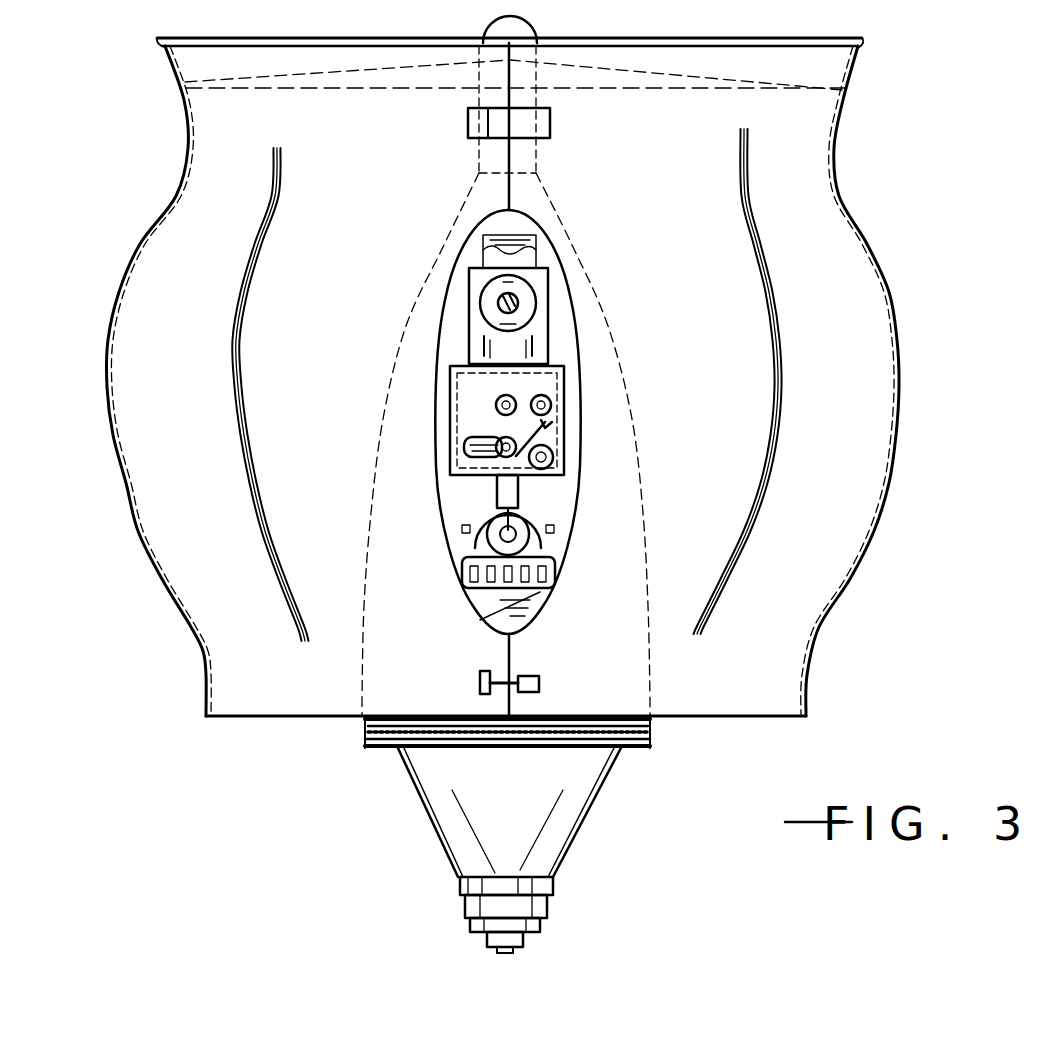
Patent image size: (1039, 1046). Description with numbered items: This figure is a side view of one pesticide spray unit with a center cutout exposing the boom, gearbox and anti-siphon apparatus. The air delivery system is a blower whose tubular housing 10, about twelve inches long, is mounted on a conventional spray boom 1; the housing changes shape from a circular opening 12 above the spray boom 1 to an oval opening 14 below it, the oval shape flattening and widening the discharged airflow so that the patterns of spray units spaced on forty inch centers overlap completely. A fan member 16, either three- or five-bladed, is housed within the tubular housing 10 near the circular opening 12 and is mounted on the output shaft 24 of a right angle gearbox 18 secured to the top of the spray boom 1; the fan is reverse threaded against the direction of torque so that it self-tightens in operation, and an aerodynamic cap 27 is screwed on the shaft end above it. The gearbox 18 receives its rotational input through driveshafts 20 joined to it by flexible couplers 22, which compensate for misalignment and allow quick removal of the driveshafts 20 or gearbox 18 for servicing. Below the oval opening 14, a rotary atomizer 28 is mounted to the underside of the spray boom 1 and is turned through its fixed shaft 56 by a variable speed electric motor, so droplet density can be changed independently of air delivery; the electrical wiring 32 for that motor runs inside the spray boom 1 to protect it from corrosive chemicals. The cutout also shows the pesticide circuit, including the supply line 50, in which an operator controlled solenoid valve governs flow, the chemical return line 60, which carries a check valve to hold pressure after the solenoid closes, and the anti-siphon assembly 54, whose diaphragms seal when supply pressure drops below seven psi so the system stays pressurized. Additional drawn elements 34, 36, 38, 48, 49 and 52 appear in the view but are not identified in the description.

The spray boom 1 is at (452, 374).
The tubular housing 10 is at (835, 162).
The circular opening 12 is at (863, 45).
The oval opening 14 is at (784, 717).
The fan member 16 is at (237, 80).
The right angle gearbox 18 is at (478, 328).
The driveshafts 20 is at (520, 310).
The flexible couplers 22 is at (528, 300).
The output shaft 24 is at (511, 155).
The aerodynamic cap 27 is at (538, 40).
The rotary atomizer 28 is at (425, 798).
The electrical wiring 32 is at (560, 440).
The bag outline 34 is at (650, 680).
The flange 36 is at (372, 721).
The control box 38 is at (452, 447).
The clamp block 48 is at (551, 122).
The valve 49 is at (480, 684).
The supply line 50 is at (498, 450).
The roller wheel 52 is at (496, 522).
The anti-siphon assembly 54 is at (540, 552).
The shaft 56 is at (540, 937).
The chemical return line 60 is at (496, 405).